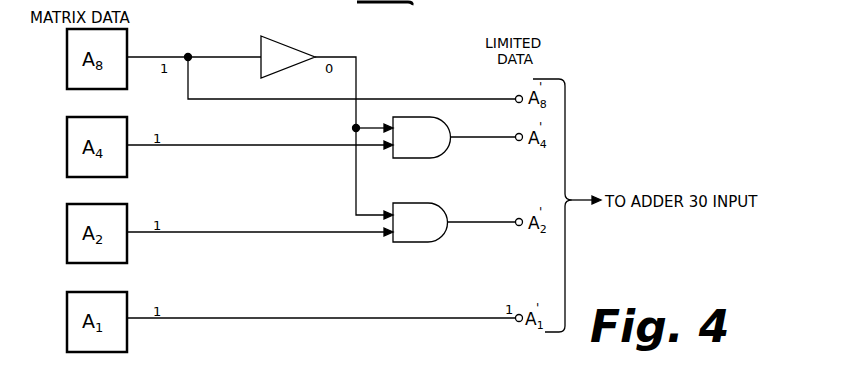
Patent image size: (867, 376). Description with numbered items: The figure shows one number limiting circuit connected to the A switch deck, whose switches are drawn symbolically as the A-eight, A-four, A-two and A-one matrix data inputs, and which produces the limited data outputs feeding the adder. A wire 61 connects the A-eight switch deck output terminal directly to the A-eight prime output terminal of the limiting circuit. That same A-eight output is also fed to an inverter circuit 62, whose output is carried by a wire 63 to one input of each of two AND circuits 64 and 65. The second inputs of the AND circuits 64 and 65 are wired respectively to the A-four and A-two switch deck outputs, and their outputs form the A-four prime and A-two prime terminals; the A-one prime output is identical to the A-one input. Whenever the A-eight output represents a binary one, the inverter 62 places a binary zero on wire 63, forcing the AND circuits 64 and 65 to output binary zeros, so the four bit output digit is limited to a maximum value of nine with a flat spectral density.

The wire 61 is at (238, 104).
The inverter circuit 62 is at (290, 50).
The wire 63 is at (356, 87).
The AND circuit 64 is at (430, 158).
The AND circuit 65 is at (418, 242).